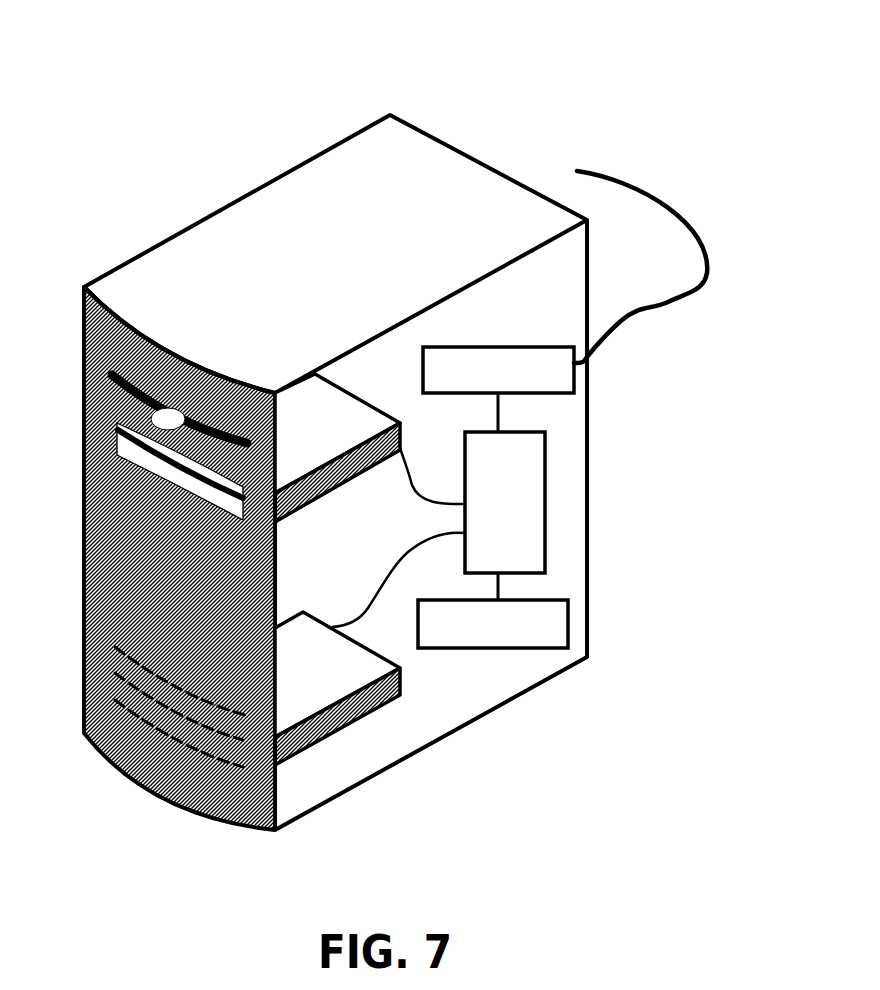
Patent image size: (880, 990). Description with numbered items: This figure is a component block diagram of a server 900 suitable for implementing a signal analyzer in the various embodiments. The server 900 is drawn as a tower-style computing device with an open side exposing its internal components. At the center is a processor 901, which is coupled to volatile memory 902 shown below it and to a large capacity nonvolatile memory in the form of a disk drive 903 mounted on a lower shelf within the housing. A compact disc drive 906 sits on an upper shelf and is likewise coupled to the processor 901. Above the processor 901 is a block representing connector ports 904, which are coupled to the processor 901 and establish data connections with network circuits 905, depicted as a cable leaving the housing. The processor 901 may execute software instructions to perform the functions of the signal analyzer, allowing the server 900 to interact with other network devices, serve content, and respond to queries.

The server 900 is at (389, 116).
The processor 901 is at (438, 529).
The volatile memory 902 is at (493, 610).
The disk drive 903 is at (400, 685).
The connector ports 904 is at (498, 389).
The network circuits 905 is at (661, 306).
The compact disc drive 906 is at (352, 483).